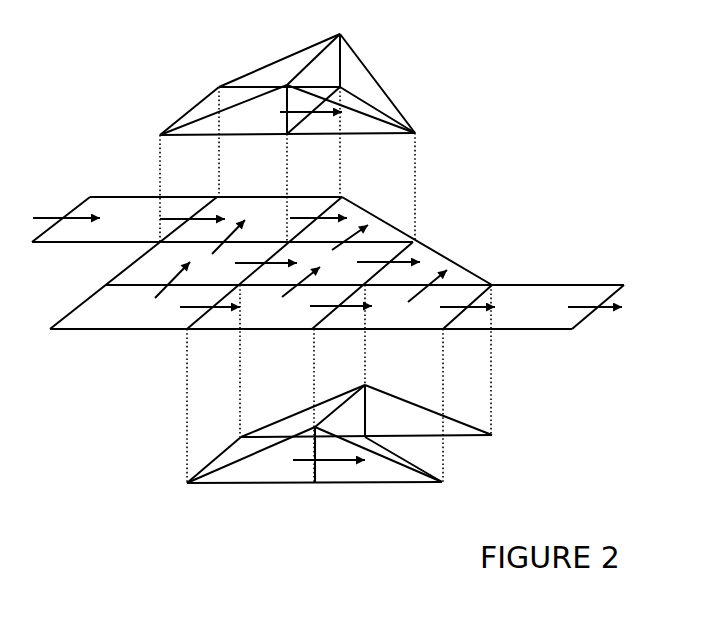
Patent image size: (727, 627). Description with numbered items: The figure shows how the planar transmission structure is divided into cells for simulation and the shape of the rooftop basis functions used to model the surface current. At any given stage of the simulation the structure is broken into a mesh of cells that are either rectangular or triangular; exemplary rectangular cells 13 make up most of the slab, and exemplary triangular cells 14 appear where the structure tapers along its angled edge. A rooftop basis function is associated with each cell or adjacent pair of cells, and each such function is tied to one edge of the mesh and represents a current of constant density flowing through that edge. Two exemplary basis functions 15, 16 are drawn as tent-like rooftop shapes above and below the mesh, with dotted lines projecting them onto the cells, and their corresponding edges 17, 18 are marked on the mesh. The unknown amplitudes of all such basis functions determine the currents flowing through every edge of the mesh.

The rectangular cells 13 is at (103, 319).
The triangular cells 14 is at (458, 273).
The basis function 15 is at (370, 64).
The basis function 16 is at (461, 471).
The edge 17 is at (322, 212).
The edge 18 is at (322, 321).